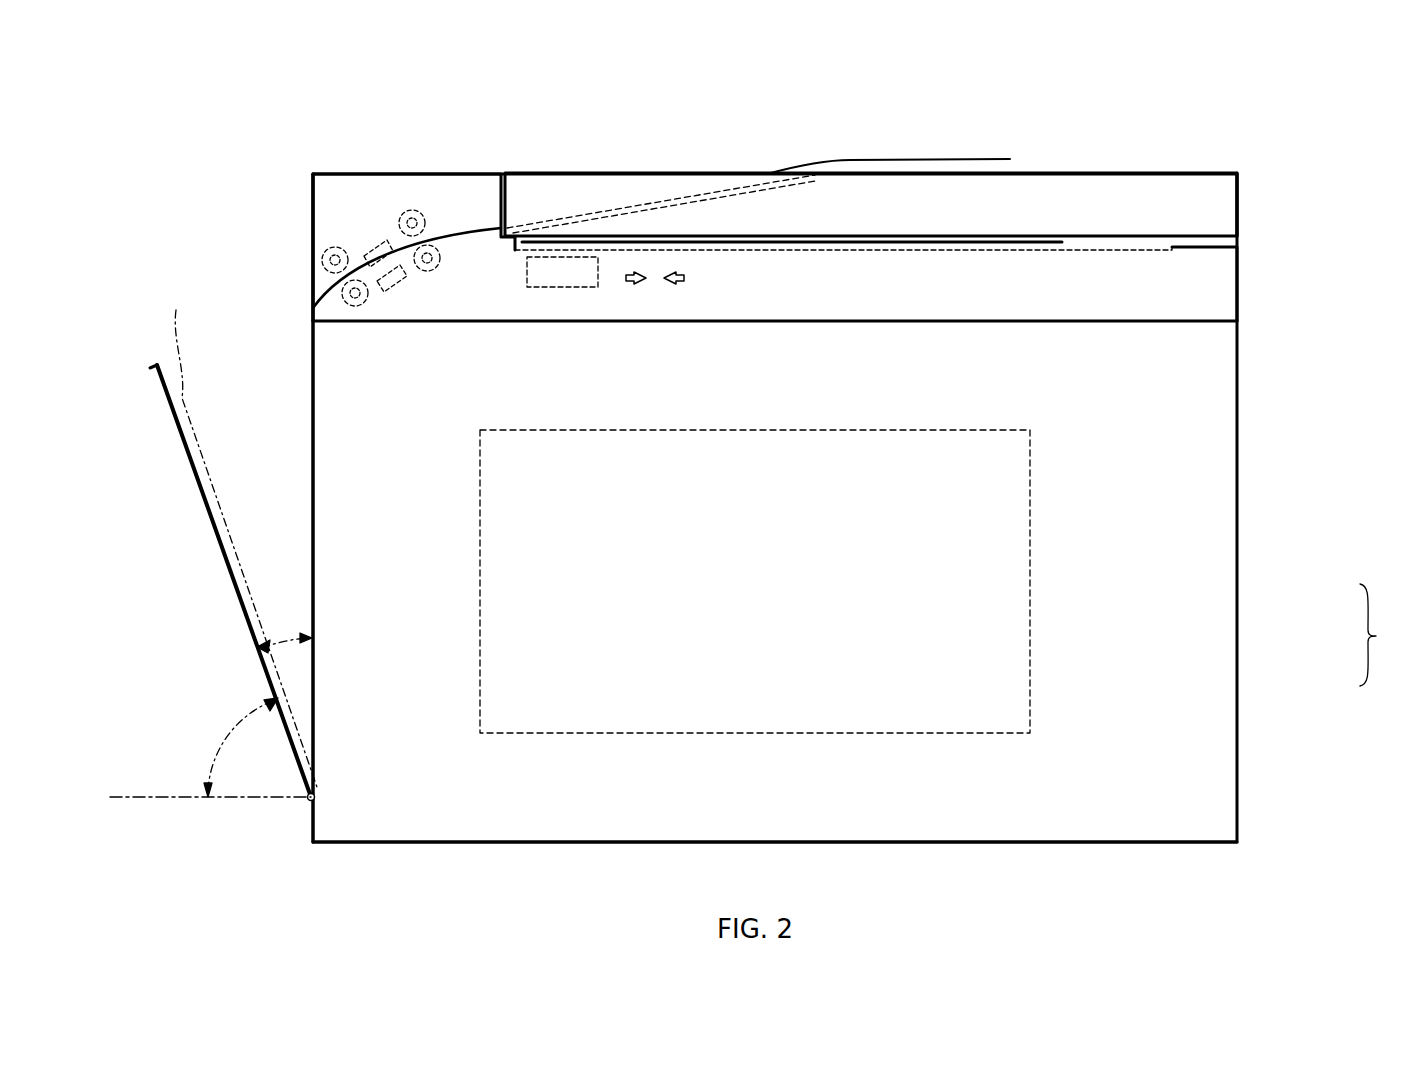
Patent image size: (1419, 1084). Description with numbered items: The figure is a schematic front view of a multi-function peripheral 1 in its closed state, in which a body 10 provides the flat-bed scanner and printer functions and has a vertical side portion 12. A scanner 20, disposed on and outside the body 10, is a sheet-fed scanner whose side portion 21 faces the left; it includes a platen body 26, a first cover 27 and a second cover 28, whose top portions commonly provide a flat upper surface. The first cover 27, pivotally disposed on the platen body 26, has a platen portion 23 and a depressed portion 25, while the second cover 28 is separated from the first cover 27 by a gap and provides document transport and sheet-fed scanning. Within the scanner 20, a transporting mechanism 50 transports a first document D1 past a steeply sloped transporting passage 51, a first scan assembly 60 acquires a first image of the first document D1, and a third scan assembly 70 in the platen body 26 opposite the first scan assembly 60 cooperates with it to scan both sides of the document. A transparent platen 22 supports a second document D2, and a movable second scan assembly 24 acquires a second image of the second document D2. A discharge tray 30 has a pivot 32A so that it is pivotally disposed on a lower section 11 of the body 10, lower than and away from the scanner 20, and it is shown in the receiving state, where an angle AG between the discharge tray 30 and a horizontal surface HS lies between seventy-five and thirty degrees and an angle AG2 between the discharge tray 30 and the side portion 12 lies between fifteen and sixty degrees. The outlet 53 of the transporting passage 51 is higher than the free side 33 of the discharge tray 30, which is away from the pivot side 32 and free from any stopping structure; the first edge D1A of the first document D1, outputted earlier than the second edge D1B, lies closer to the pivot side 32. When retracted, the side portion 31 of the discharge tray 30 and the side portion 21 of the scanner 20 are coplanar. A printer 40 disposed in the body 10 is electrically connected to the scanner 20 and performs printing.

The multi-function peripheral 1 is at (1232, 153).
The body 10 is at (1242, 432).
The lower section 11 is at (313, 815).
The side portion 12 is at (313, 527).
The scanner 20 is at (1364, 640).
The side portion 21 is at (313, 240).
The transparent platen 22 is at (1146, 252).
The platen portion 23 is at (1062, 172).
The second scan assembly 24 is at (600, 285).
The depressed portion 25 is at (730, 195).
The platen body 26 is at (1240, 288).
The first cover 27 is at (1240, 200).
The second cover 28 is at (410, 180).
The discharge tray 30 is at (192, 482).
The side portion 31 is at (180, 427).
The pivot side 32 is at (305, 770).
The pivot 32A is at (308, 800).
The free side 33 is at (152, 366).
The printer 40 is at (1030, 572).
The transporting mechanism 50 is at (342, 245).
The transporting passage 51 is at (360, 280).
The outlet 53 is at (313, 306).
The first scan assembly 60 is at (330, 265).
The third scan assembly 70 is at (383, 280).
The first document D1 is at (217, 497).
The first edge D1A is at (507, 228).
The second edge D1B is at (1015, 95).
The second document D2 is at (960, 245).
The angle AG is at (232, 747).
The angle AG2 is at (283, 615).
The horizontal surface HS is at (148, 797).